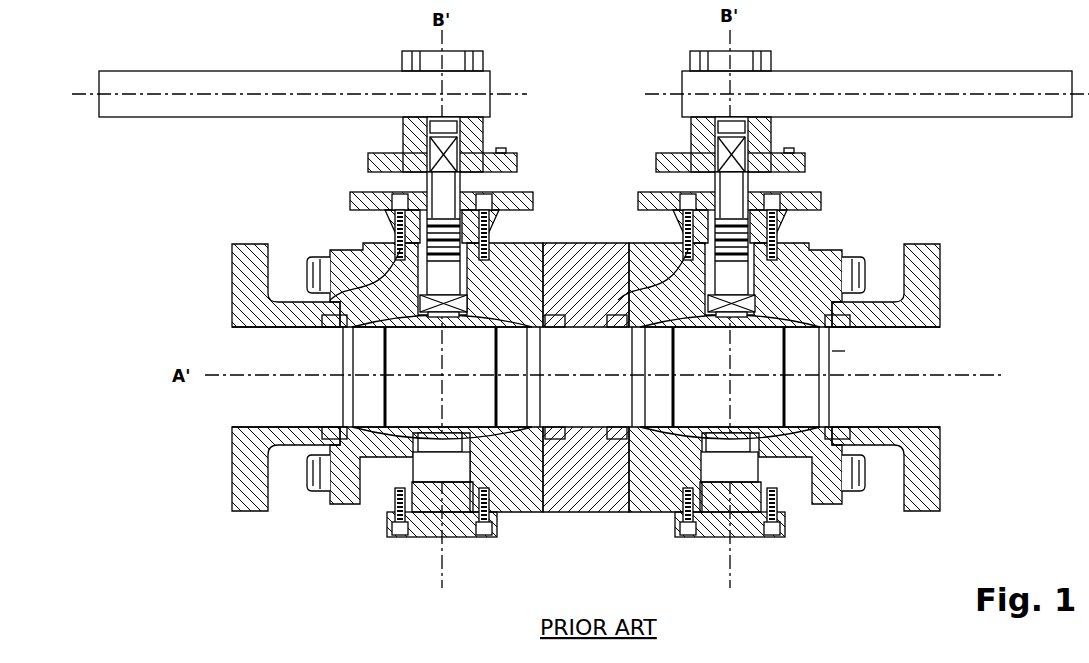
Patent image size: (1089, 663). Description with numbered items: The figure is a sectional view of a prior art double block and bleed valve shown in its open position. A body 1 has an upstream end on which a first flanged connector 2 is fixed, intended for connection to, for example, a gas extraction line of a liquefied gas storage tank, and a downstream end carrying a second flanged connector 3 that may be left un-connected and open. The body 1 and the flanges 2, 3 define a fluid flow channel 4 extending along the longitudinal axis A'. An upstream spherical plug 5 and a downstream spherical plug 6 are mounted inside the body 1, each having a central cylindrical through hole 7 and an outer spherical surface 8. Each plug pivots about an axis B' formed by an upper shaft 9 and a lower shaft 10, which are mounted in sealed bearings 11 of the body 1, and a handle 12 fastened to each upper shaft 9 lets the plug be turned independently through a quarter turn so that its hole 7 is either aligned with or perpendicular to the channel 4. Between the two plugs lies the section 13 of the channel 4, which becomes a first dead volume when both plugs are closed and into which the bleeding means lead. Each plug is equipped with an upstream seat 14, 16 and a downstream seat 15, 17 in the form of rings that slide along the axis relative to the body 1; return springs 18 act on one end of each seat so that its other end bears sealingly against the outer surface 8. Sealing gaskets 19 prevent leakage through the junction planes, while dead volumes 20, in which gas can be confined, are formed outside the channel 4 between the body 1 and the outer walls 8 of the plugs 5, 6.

The body 1 is at (586, 379).
The first flanged connector 2 is at (243, 306).
The second flanged connector 3 is at (912, 304).
The fluid flow channel 4 is at (918, 357).
The upstream spherical plug 5 is at (490, 427).
The downstream spherical plug 6 is at (765, 427).
The central cylindrical through hole 7 is at (348, 452).
The outer spherical surface 8 is at (380, 298).
The upper shaft 9 is at (426, 178).
The lower shaft 10 is at (455, 493).
The sealed bearings 11 is at (548, 185).
The handle 12 is at (357, 80).
The section of the fluid flow channel 13 is at (597, 305).
The upstream seat 14 is at (358, 391).
The downstream seat 15 is at (548, 430).
The upstream seat 16 is at (632, 430).
The downstream seat 17 is at (845, 351).
The return springs 18 is at (330, 326).
The sealing gaskets 19 is at (312, 275).
The dead volumes 20 is at (480, 313).